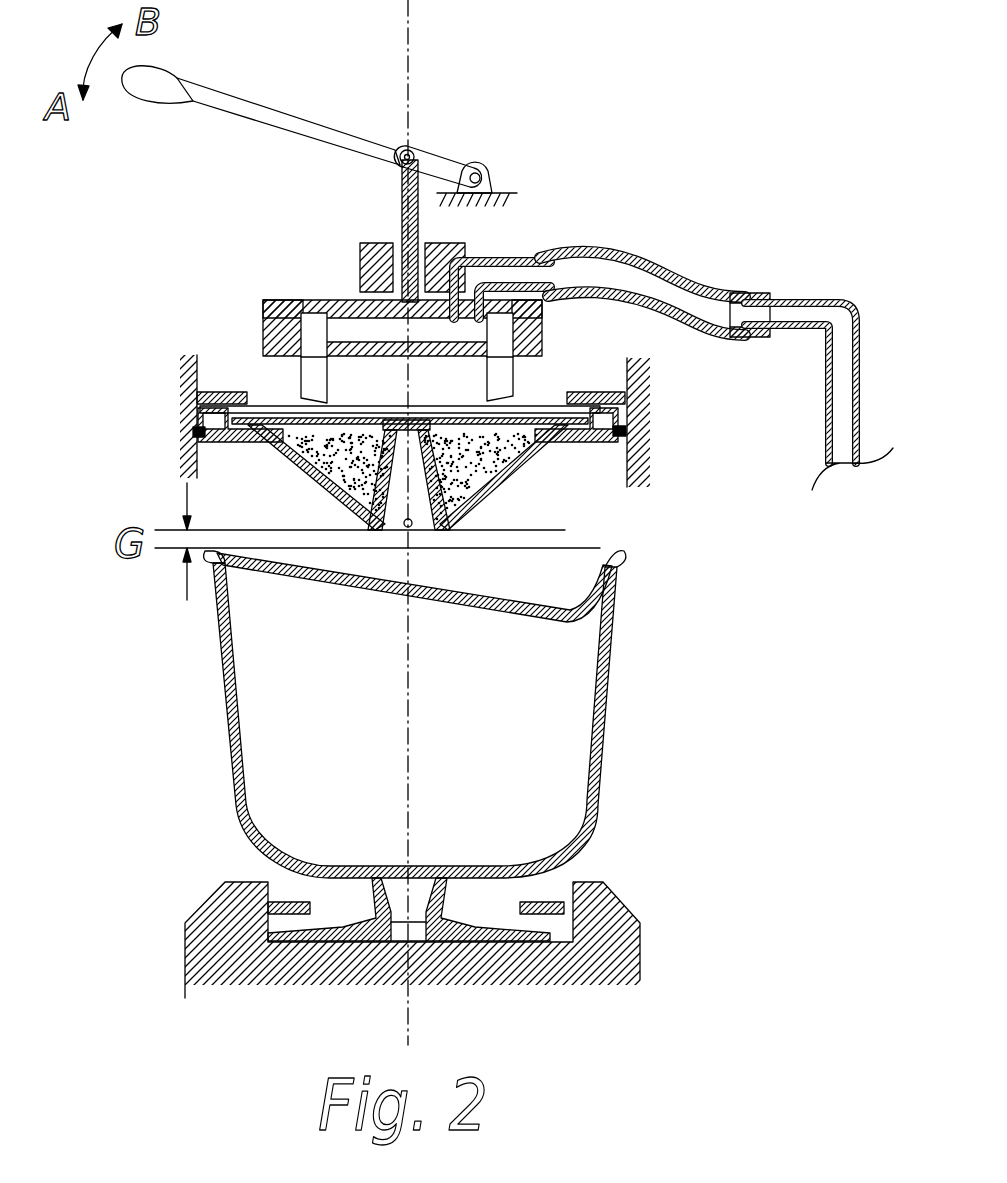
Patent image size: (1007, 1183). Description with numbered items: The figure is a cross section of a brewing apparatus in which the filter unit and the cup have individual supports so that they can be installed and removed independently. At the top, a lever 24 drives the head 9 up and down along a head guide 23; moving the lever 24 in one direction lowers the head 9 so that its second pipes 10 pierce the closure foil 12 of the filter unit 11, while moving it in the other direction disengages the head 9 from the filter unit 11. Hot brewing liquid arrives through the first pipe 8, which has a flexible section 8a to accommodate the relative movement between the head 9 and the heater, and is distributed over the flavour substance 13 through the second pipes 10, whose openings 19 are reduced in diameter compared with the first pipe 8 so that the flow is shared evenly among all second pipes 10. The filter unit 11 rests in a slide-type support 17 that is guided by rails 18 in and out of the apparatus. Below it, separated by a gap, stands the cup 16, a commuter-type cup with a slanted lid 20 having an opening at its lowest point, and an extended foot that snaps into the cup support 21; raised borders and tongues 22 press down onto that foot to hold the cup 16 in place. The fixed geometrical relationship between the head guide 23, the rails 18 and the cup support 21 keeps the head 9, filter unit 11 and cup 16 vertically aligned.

The first pipe 8 is at (845, 341).
The flexible section 8a is at (657, 289).
The head 9 is at (268, 306).
The second pipes 10 is at (498, 381).
The filter unit 11 is at (505, 437).
The closure foil 12 is at (518, 409).
The flavour substance 13 is at (338, 480).
The cup 16 is at (563, 733).
The support 17 is at (232, 443).
The rails 18 is at (190, 436).
The openings 19 is at (332, 326).
The lid 20 is at (473, 597).
The support 21 is at (620, 940).
The tongues 22 is at (270, 907).
The head guide 23 is at (388, 252).
The lever 24 is at (303, 129).